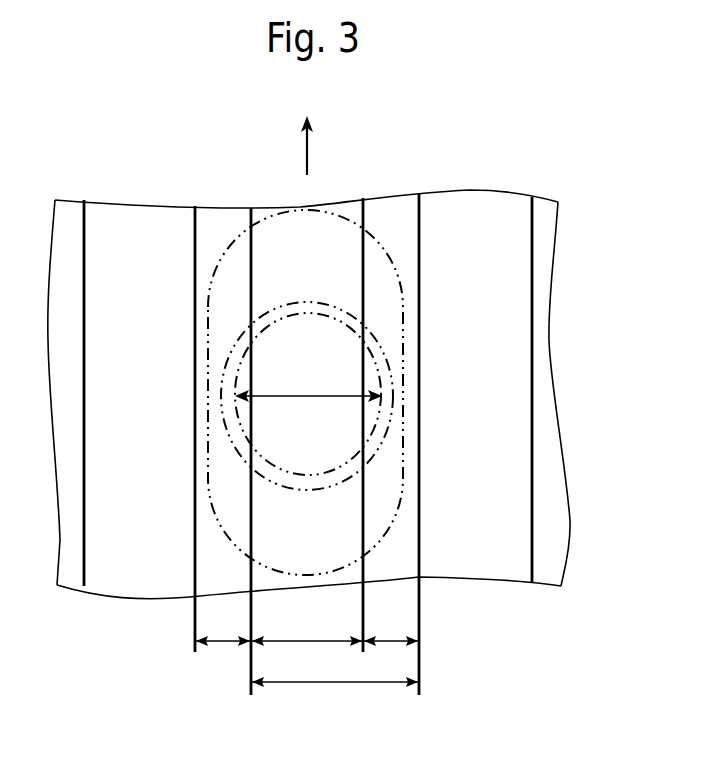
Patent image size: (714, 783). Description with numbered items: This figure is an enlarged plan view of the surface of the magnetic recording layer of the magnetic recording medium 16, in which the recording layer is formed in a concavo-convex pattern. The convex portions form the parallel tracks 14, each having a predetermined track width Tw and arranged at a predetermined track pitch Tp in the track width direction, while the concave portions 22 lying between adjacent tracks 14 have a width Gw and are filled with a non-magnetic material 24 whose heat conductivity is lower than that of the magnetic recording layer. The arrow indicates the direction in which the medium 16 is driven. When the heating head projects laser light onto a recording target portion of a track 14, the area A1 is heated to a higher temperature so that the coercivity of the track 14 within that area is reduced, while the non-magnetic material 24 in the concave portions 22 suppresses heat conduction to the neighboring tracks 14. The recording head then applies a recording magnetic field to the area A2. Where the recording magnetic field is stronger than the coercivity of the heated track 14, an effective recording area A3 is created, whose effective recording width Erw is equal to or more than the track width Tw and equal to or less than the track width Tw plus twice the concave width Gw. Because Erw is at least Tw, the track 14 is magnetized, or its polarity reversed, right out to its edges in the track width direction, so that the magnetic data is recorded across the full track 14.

The track 14 is at (331, 364).
The magnetic recording medium 16 is at (558, 305).
The concave portion 22 is at (411, 409).
The non-magnetic material 24 is at (390, 217).
The heated area A1 is at (400, 284).
The recording magnetic field area A2 is at (313, 298).
The effective recording area A3 is at (308, 476).
The effective recording width Erw is at (308, 385).
The width of concave portion Gw is at (307, 653).
The track width Tw is at (307, 653).
The track pitch Tp is at (335, 695).